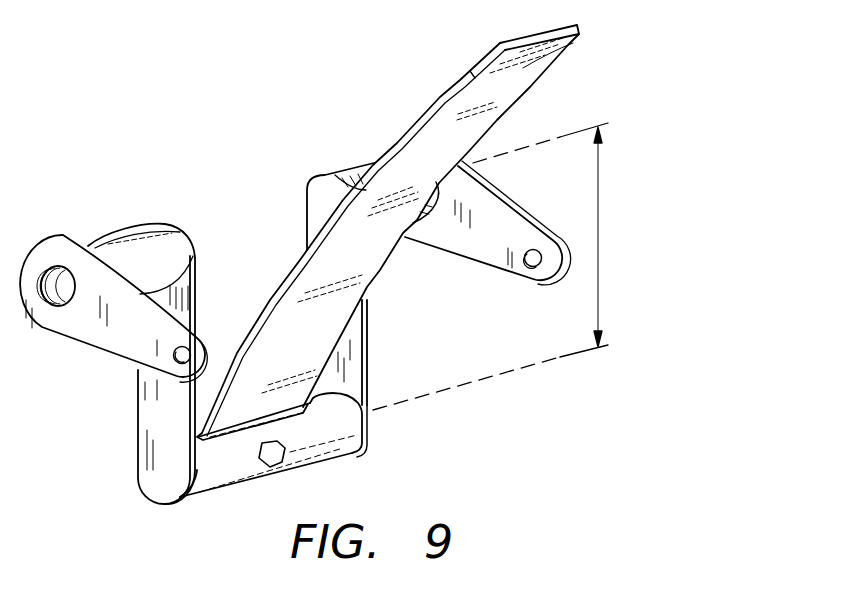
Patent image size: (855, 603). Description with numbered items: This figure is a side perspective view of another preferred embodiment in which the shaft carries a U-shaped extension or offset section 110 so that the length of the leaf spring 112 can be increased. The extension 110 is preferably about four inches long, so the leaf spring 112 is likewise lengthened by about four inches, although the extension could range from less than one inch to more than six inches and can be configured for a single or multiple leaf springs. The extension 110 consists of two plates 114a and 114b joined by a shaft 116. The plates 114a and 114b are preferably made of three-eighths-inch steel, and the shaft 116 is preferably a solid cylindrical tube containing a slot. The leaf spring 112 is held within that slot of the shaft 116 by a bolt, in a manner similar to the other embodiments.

The U-shaped extension or offset section 110 is at (188, 521).
The leaf spring 112 is at (578, 44).
The plate 114a is at (173, 428).
The plate 114b is at (348, 348).
The shaft 116 is at (300, 440).